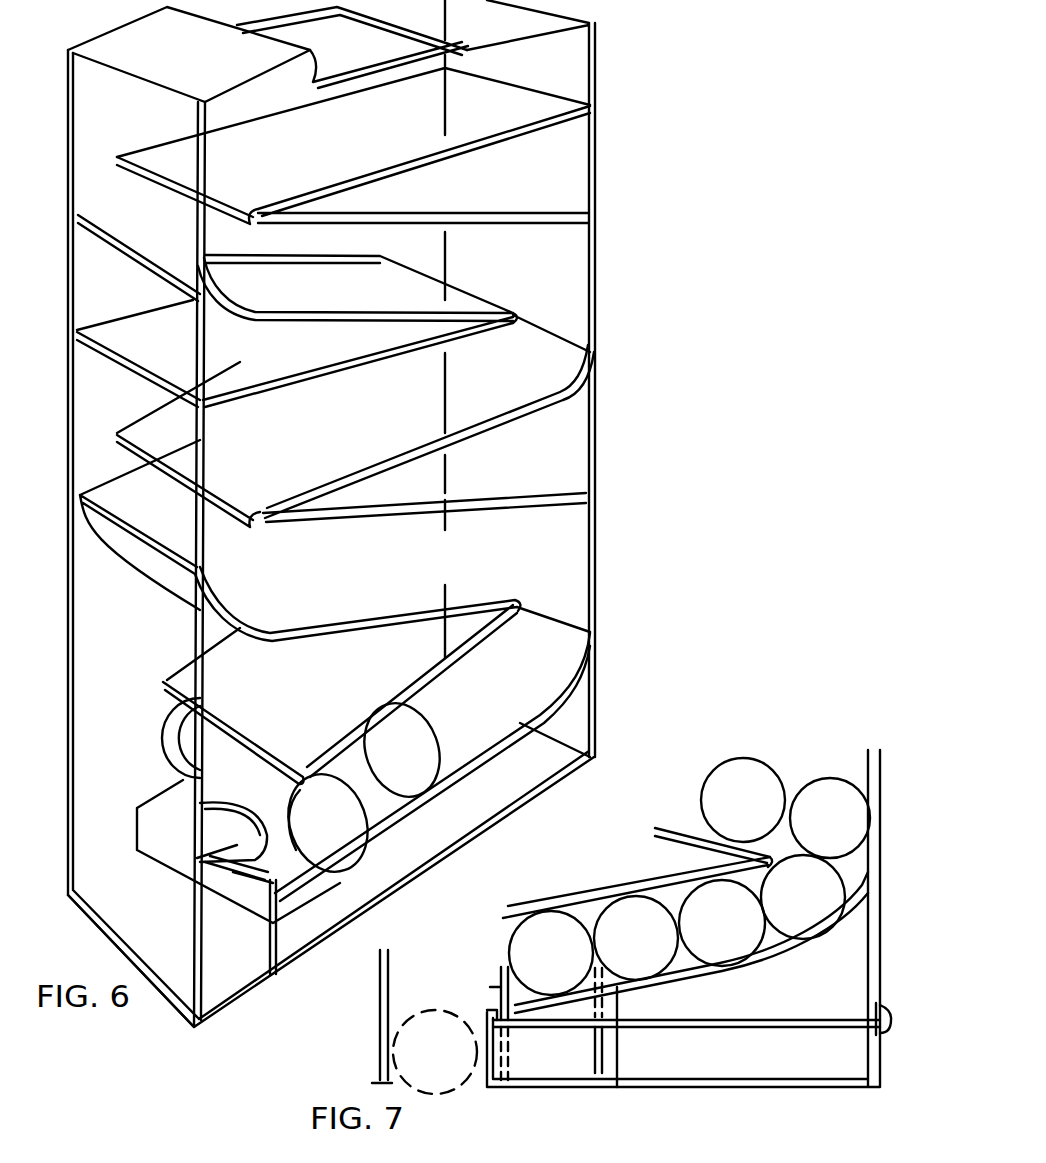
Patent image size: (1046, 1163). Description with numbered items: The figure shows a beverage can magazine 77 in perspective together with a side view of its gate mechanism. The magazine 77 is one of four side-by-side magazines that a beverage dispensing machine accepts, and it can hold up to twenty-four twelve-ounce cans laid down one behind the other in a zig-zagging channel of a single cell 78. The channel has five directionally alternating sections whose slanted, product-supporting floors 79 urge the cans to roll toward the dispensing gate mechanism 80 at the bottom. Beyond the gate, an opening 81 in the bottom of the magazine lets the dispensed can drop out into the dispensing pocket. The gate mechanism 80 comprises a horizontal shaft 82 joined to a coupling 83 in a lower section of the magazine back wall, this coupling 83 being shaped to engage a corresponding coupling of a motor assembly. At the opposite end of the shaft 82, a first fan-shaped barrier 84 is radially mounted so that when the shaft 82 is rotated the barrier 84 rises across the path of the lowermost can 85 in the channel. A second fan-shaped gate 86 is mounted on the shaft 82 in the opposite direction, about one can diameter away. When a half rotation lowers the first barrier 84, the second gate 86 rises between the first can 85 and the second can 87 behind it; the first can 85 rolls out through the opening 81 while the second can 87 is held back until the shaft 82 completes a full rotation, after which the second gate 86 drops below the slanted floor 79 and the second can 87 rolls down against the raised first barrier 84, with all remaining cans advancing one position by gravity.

In FIG. 6, the can magazine 77 is at (682, 70).
In FIG. 6, the single cell 78 is at (590, 263).
In FIG. 6, the slanted product-supporting floors 79 is at (410, 293).
In FIG. 6, the dispensing gate mechanism 80 is at (222, 883).
In FIG. 6, the opening 81 is at (172, 956).
In FIG. 7, the horizontal shaft 82 is at (758, 1018).
In FIG. 7, the coupling 83 is at (870, 993).
In FIG. 7, the first fan-shaped barrier 84 is at (490, 987).
In FIG. 6, the lowermost can 85 is at (350, 820).
In FIG. 7, the lowermost can 85 is at (547, 927).
In FIG. 7, the second fan-shaped gate 86 is at (592, 1043).
In FIG. 7, the second can 87 is at (628, 917).